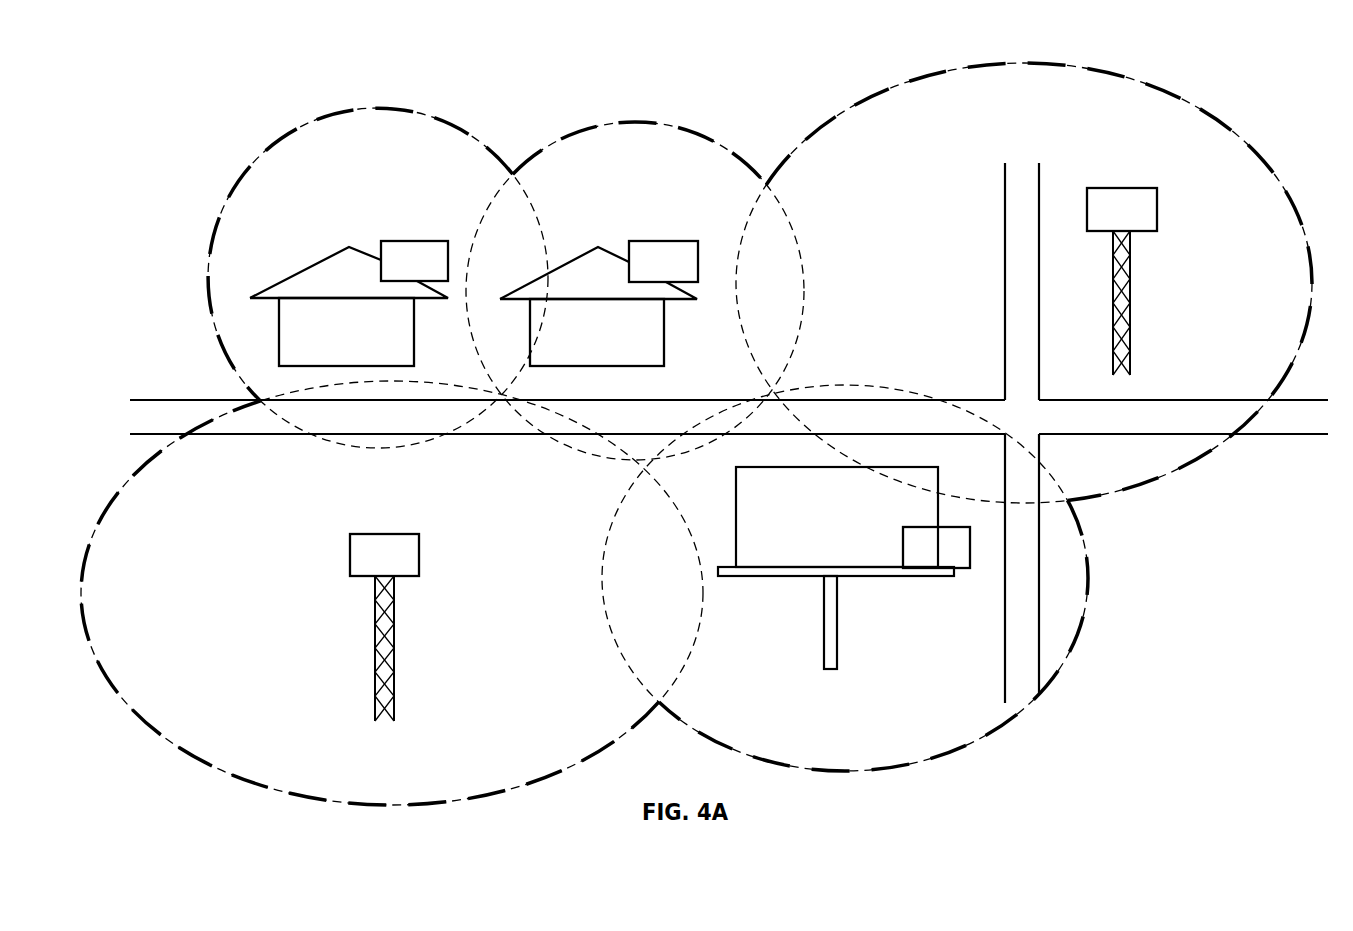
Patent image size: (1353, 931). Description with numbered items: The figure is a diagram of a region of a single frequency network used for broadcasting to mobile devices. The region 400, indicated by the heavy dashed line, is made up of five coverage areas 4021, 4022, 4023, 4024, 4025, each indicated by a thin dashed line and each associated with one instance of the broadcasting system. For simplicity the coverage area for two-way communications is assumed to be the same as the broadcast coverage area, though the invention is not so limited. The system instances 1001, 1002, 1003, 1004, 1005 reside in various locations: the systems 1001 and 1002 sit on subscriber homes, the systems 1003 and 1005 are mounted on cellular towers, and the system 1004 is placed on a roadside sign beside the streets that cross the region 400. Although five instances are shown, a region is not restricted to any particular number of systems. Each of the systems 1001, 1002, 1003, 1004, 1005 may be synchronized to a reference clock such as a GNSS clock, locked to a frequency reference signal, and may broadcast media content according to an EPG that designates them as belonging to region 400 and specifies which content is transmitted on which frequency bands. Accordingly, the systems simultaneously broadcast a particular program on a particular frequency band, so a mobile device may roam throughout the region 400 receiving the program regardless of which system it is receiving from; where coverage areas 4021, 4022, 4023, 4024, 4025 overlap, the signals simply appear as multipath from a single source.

The region 400 is at (259, 151).
The coverage area 4021 is at (398, 110).
The coverage area 4022 is at (660, 127).
The coverage area 4023 is at (1058, 65).
The coverage area 4024 is at (903, 766).
The coverage area 4025 is at (436, 804).
The system 1001 is at (432, 274).
The system 1002 is at (683, 274).
The system 1003 is at (1142, 221).
The system 1004 is at (956, 557).
The system 1005 is at (403, 566).